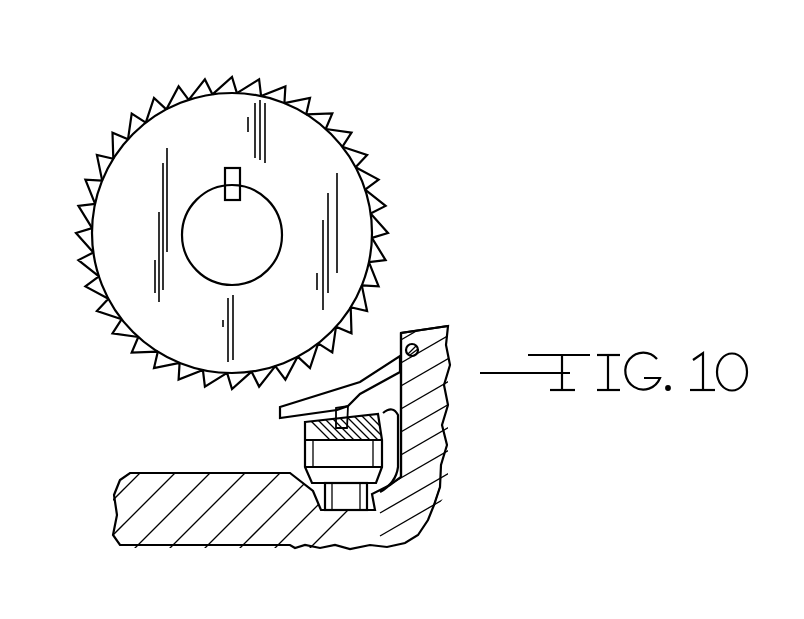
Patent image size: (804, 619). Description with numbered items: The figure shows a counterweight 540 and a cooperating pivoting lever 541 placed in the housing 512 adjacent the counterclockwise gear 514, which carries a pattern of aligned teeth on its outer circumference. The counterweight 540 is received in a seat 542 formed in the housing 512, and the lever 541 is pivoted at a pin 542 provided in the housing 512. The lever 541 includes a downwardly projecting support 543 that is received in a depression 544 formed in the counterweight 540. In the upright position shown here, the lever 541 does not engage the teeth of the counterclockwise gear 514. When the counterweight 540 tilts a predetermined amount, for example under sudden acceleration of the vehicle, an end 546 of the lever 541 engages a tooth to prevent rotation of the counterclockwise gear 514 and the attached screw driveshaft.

The counterclockwise gear 514 is at (127, 130).
The housing 512 is at (427, 328).
The seat 542 is at (445, 338).
The end of the lever 546 is at (284, 405).
The pivoting lever 541 is at (365, 372).
The counterweight 540 is at (303, 452).
The downwardly projecting support 543 is at (388, 425).
The depression 544 is at (423, 463).